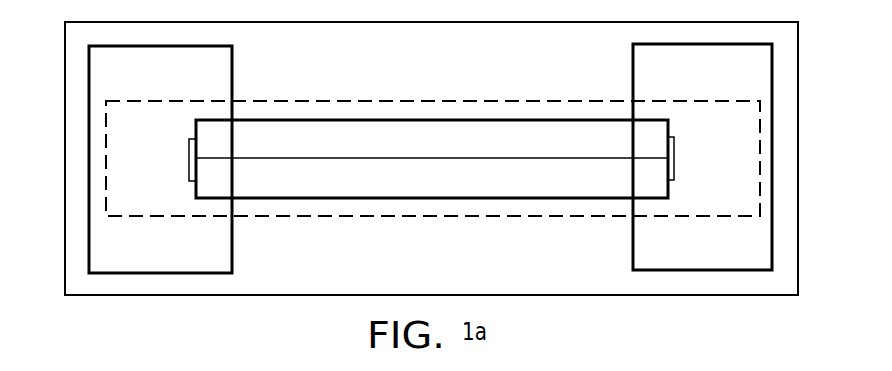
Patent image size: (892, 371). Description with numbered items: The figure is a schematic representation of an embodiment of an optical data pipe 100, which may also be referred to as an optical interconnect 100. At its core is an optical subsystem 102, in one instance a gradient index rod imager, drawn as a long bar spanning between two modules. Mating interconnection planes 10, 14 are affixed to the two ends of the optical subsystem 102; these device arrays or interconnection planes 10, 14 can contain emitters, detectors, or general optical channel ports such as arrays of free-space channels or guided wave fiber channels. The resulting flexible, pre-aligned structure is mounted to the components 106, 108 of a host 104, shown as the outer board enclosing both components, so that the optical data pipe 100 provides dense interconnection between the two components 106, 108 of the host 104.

The optical data pipe 100 is at (453, 100).
The optical subsystem 102 is at (450, 198).
The host 104 is at (666, 295).
The component 106 is at (233, 63).
The component 108 is at (632, 61).
The mating interconnection plane 10 is at (189, 160).
The mating interconnection plane 14 is at (674, 158).